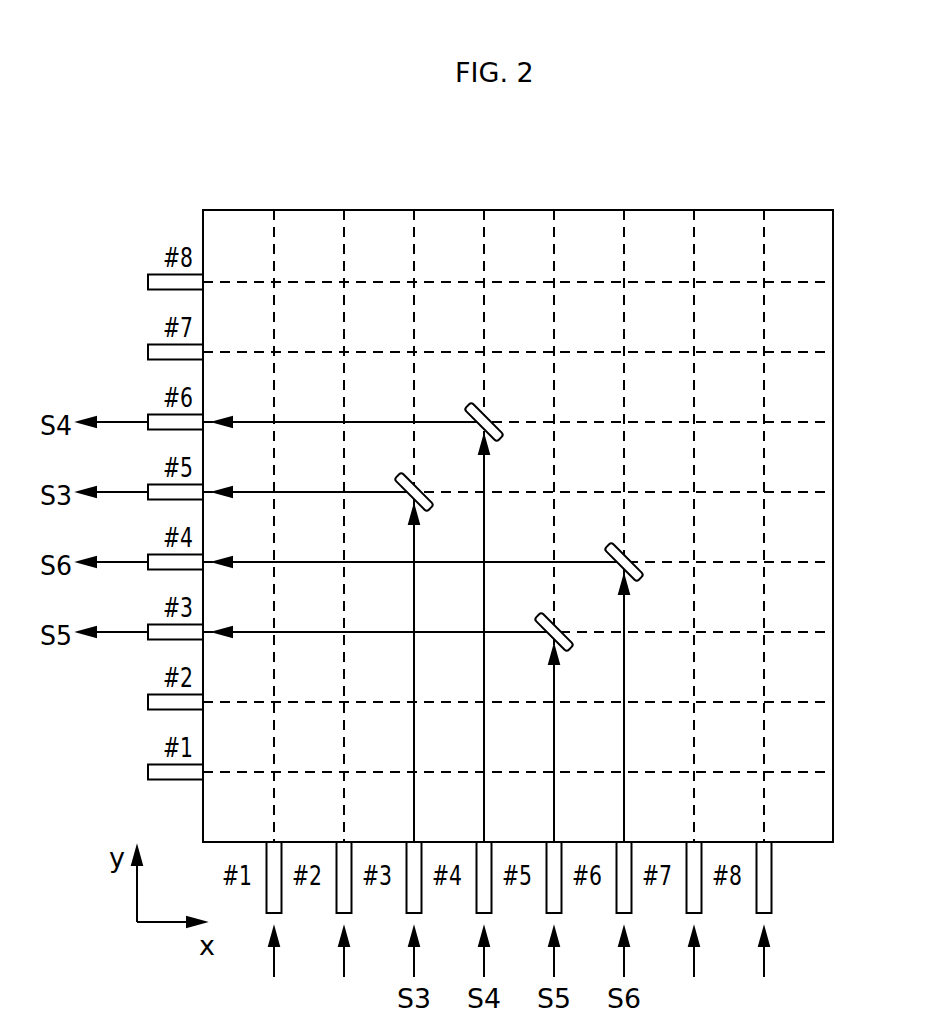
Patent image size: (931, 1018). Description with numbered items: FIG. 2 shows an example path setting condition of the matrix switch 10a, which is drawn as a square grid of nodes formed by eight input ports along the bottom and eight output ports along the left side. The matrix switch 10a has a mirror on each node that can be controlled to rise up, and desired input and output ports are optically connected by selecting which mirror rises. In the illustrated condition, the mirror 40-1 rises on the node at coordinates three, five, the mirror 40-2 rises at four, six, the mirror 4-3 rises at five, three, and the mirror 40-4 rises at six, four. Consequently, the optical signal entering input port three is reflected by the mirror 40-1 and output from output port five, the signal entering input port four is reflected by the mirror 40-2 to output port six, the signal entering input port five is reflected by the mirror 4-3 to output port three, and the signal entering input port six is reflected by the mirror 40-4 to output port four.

The matrix switch 10a is at (530, 208).
The mirror 40-1 is at (399, 472).
The mirror 40-2 is at (485, 418).
The mirror 40-4 is at (630, 555).
The mirror 4-3 is at (559, 627).